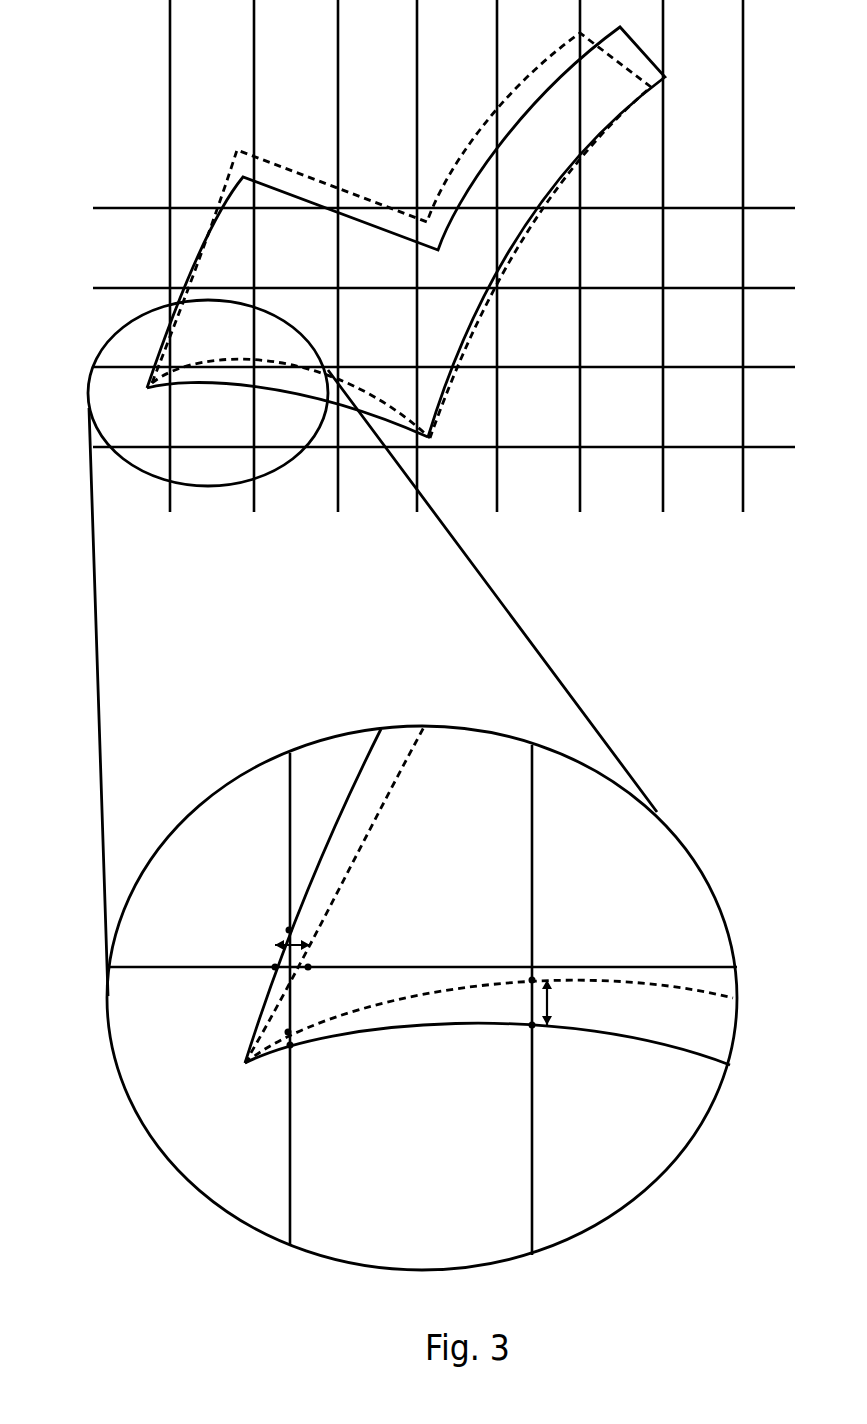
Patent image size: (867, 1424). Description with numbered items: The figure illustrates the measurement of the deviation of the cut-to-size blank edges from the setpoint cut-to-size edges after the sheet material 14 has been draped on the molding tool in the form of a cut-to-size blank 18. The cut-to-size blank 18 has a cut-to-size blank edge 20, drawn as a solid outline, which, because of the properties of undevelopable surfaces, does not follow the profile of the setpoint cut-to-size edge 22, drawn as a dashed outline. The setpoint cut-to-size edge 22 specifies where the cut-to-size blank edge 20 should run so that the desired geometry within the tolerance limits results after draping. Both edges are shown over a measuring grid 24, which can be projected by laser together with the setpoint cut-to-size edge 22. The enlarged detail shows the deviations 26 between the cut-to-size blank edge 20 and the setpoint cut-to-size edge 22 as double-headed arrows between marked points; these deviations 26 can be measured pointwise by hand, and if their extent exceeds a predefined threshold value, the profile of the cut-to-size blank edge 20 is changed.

The sheet material 14 is at (633, 60).
The cut-to-size blank 18 is at (596, 110).
The cut-to-size blank edge 20 is at (235, 385).
The setpoint cut-to-size edge 22 is at (297, 360).
The measuring grid 24 is at (170, 108).
The deviations 26 is at (289, 930).